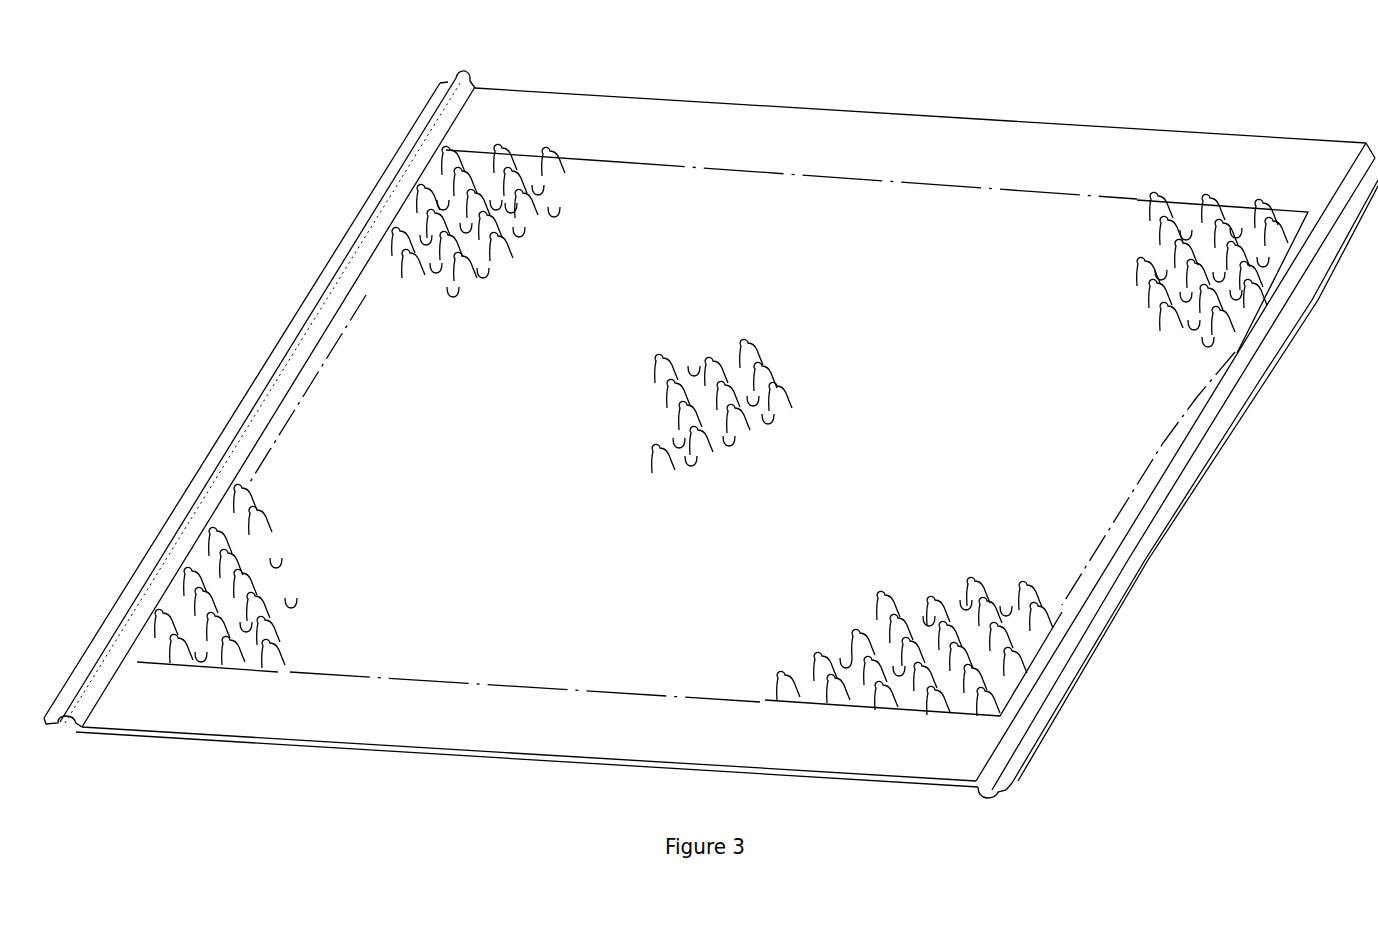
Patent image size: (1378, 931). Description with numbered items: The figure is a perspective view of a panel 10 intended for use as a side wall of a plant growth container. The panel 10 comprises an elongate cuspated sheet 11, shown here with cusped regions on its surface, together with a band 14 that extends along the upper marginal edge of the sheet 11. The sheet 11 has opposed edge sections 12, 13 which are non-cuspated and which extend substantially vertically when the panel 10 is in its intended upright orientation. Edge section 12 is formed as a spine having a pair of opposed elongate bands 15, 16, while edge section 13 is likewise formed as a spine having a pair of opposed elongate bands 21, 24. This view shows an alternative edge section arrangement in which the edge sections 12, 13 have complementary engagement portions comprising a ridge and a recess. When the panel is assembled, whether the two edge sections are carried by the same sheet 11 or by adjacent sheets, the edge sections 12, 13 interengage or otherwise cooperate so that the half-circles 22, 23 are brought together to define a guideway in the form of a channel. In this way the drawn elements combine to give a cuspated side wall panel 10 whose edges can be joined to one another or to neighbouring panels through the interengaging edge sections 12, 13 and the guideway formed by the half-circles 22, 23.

The panel 10 is at (859, 97).
The cuspated sheet 11 is at (663, 176).
The edge section 12 is at (264, 358).
The edge section 13 is at (1110, 627).
The band 14 is at (1030, 140).
The elongate band 15 is at (240, 396).
The elongate band 16 is at (276, 437).
The elongate band 21 is at (1165, 442).
The half-circle 22 is at (337, 283).
The half-circle 23 is at (1173, 472).
The elongate band 24 is at (1168, 509).